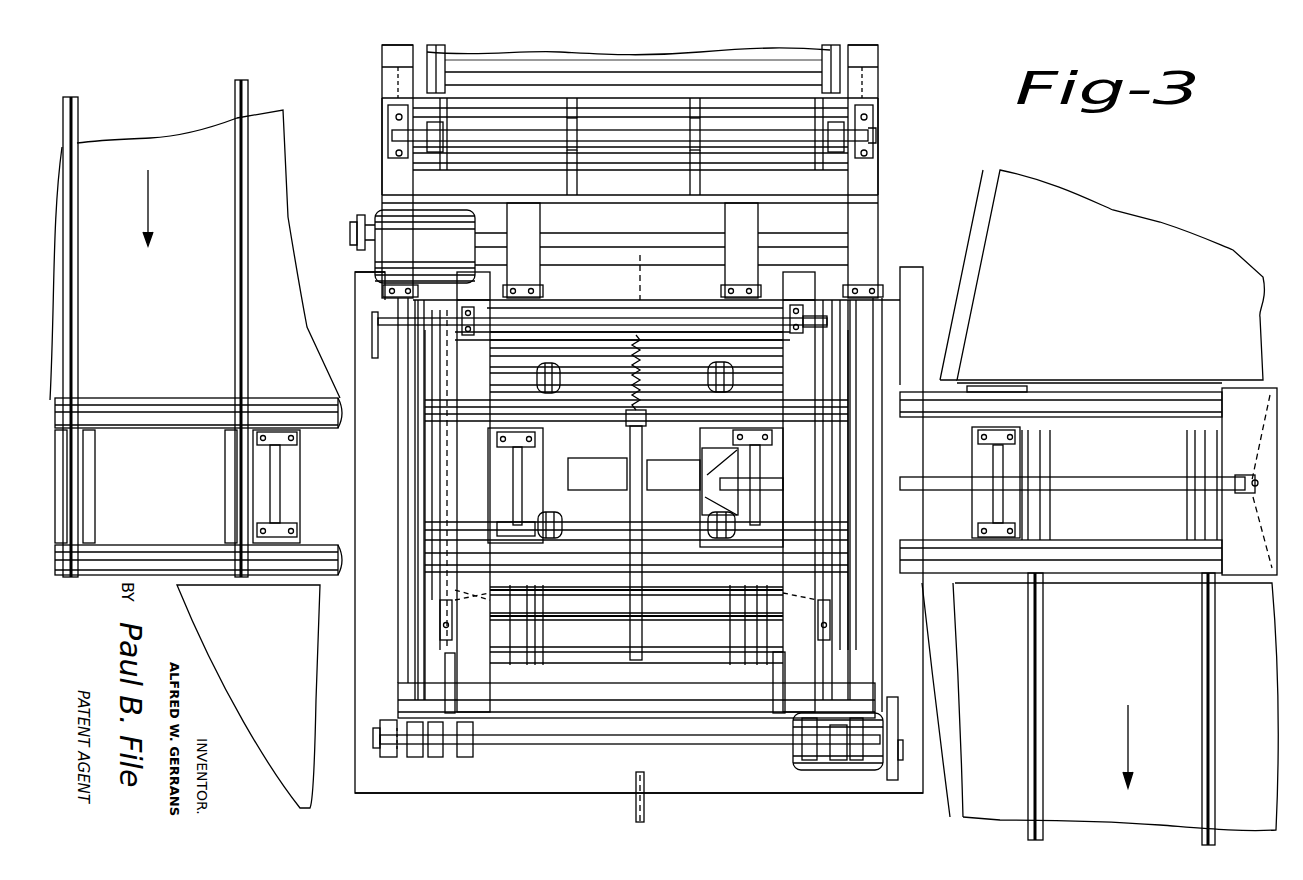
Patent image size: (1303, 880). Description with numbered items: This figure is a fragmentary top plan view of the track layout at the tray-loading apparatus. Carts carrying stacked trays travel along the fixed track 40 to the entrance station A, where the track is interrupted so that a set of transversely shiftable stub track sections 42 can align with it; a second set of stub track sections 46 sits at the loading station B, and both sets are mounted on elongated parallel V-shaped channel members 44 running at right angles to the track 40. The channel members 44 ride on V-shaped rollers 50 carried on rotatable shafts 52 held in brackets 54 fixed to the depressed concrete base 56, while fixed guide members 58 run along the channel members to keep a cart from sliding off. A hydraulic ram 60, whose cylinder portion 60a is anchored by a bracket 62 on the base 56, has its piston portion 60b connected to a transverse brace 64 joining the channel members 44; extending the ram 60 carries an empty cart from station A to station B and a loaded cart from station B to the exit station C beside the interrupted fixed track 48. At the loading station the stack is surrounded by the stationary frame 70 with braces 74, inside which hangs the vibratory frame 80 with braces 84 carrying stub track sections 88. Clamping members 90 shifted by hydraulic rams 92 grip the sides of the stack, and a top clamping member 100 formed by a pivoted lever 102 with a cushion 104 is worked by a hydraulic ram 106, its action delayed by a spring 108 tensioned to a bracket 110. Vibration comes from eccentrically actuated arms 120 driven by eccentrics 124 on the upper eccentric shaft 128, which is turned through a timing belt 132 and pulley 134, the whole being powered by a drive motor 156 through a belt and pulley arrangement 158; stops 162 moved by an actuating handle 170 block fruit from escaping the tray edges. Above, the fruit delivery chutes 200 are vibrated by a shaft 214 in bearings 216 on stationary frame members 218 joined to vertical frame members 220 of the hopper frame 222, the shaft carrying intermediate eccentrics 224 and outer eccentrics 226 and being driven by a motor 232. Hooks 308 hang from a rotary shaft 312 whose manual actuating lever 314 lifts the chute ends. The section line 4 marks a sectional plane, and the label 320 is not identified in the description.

The fixed track 40 is at (240, 283).
The stub track sections 42 is at (220, 553).
The channel members 44 is at (930, 547).
The stub track sections 46 is at (712, 512).
The fixed track 48 is at (1207, 655).
The V-shaped rollers 50 is at (1002, 593).
The rotatable shafts 52 is at (997, 452).
The brackets 54 is at (1013, 463).
The concrete base 56 is at (523, 800).
The guide members 58 is at (1125, 380).
The hydraulic ram 60 is at (905, 487).
The cylinder portion 60a is at (1152, 495).
The piston portion 60b is at (1200, 453).
The bracket 62 is at (715, 453).
The transverse brace 64 is at (1243, 563).
The stationary frame 70 is at (570, 708).
The braces 74 is at (465, 582).
The vibratory frame 80 is at (690, 658).
The braces 84 is at (637, 682).
The stub track sections 88 is at (735, 365).
The clamping members 90 is at (833, 630).
The hydraulic rams 92 is at (857, 522).
The top clamping member 100 is at (603, 456).
The pivoted lever 102 is at (644, 430).
The tray-engaging cushion 104 is at (612, 483).
The hydraulic ram 106 is at (646, 500).
The spring 108 is at (640, 375).
The bracket 110 is at (646, 333).
The eccentrically-actuated arms 120 is at (843, 682).
The eccentric mechanisms 124 is at (840, 750).
The eccentric shaft 128 is at (695, 738).
The timing belt 132 is at (393, 755).
The pulley 134 is at (383, 753).
The drive motor 156 is at (793, 752).
The belt and pulley arrangement 158 is at (890, 775).
The stops 162 is at (715, 612).
The actuating handle 170 is at (636, 807).
The fruit delivery chutes 200 is at (822, 212).
The shaft 214 is at (868, 130).
The bearings 216 is at (875, 128).
The stationary frame members 218 is at (870, 223).
The vertical frame members 220 is at (870, 85).
The stationary frame 222 is at (378, 46).
The eccentrics 224 is at (700, 148).
The eccentrics 226 is at (838, 152).
The motor 232 is at (412, 246).
The hook 308 is at (700, 320).
The rotary shaft 312 is at (770, 318).
The manual actuating lever 314 is at (368, 348).
The conveyor belt 320 is at (820, 55).
The section line 4- 4 is at (672, 814).
The entrance station A is at (126, 448).
The loading station B is at (568, 452).
The exit station C is at (1128, 537).